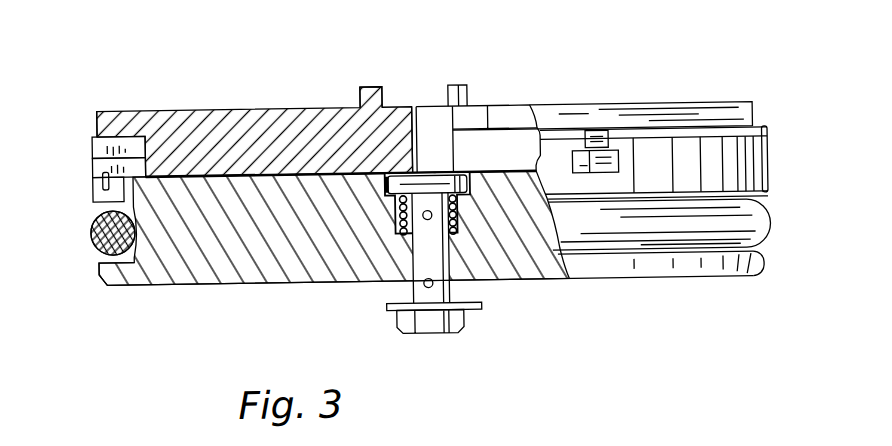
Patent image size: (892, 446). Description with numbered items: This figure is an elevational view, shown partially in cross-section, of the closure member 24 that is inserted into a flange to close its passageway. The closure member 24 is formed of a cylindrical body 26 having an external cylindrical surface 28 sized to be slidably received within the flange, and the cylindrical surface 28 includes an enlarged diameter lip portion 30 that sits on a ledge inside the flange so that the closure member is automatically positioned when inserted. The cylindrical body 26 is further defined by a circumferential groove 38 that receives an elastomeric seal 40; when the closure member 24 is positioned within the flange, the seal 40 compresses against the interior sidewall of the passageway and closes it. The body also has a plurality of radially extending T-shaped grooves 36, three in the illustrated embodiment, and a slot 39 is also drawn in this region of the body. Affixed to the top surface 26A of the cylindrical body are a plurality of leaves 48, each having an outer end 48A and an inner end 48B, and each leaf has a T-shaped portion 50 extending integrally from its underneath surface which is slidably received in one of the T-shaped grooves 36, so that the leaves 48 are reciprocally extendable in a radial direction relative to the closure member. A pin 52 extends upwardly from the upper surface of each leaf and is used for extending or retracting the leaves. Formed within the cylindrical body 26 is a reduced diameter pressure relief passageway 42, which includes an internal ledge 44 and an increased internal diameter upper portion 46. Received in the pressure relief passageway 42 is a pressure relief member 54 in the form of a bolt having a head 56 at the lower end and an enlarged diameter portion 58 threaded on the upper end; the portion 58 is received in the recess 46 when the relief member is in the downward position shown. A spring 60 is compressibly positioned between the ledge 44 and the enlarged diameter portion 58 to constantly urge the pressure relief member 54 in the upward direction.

The closure member 24 is at (753, 77).
The cylindrical body 26 is at (215, 266).
The top surface of the cylindrical body 26A is at (230, 173).
The external cylindrical surface 28 is at (96, 196).
The enlarged diameter lip portion 30 is at (93, 135).
The T-shaped grooves 36 is at (93, 158).
The circumferential groove 38 is at (98, 256).
The slot 39 is at (103, 172).
The elastomeric seal 40 is at (94, 238).
The pressure relief passageway 42 is at (411, 277).
The internal ledge 44 is at (398, 225).
The increased internal diameter upper portion 46 is at (386, 193).
The leaves 48 is at (190, 122).
The outer end of leaf 48A is at (98, 106).
The inner end of leaf 48B is at (416, 118).
The T-shaped portion 50 is at (240, 134).
The pin 52 is at (372, 86).
The pressure relief member 54 is at (430, 262).
The head 56 is at (434, 322).
The enlarged diameter portion 58 is at (430, 175).
The spring 60 is at (457, 223).